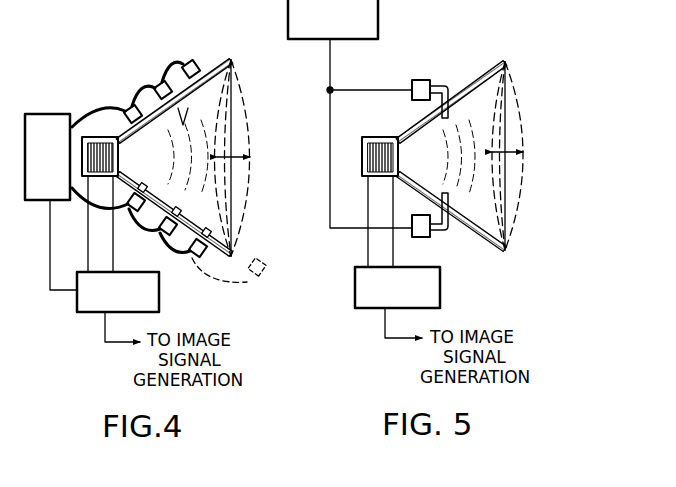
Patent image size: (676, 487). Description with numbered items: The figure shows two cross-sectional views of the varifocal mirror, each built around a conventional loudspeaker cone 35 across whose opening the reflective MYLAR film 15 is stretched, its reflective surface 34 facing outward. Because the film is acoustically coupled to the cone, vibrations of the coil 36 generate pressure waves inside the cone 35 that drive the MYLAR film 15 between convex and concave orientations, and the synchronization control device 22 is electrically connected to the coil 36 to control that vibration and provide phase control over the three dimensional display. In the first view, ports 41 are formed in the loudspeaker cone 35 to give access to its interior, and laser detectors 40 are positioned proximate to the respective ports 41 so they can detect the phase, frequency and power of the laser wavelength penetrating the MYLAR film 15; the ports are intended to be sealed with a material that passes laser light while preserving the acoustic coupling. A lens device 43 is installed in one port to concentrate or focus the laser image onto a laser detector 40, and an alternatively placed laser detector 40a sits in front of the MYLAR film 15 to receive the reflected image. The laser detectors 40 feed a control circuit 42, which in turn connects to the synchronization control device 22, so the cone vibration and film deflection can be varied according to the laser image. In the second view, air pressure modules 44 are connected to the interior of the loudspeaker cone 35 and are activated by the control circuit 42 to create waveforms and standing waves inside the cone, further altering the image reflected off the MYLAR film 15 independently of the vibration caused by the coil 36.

In FIG. 4, the MYLAR film 15 is at (231, 105).
In FIG. 5, the MYLAR film 15 is at (505, 117).
In FIG. 4, the synchronization control device 22 is at (118, 292).
In FIG. 5, the synchronization control device 22 is at (397, 287).
In FIG. 4, the reflective surface 34 is at (233, 123).
In FIG. 4, the loudspeaker cone 35 is at (217, 60).
In FIG. 5, the loudspeaker cone 35 is at (486, 67).
In FIG. 4, the coil 36 is at (97, 137).
In FIG. 5, the coil 36 is at (378, 137).
In FIG. 4, the laser detectors 40 is at (185, 60).
In FIG. 4, the laser detector 40a is at (272, 273).
In FIG. 4, the ports 41 is at (183, 125).
In FIG. 4, the control circuit 42 is at (38, 168).
In FIG. 5, the control circuit 42 is at (320, 29).
In FIG. 4, the lens device 43 is at (147, 186).
In FIG. 5, the air pressure modules 44 is at (422, 80).